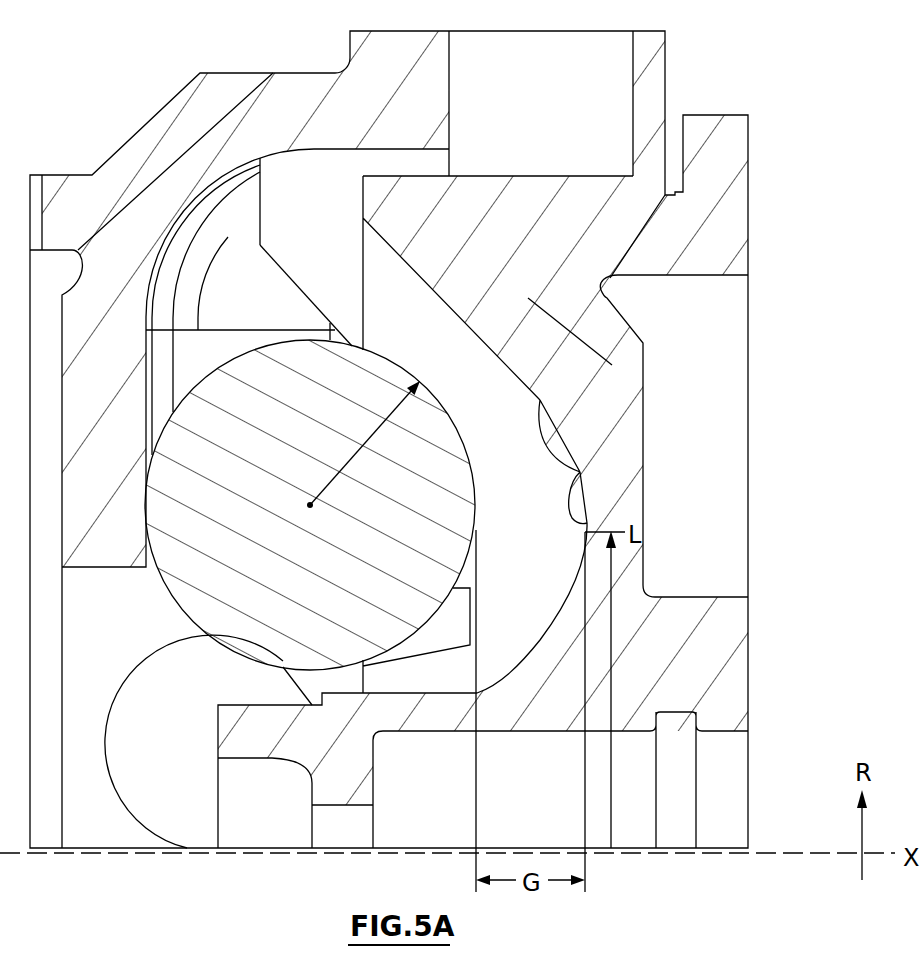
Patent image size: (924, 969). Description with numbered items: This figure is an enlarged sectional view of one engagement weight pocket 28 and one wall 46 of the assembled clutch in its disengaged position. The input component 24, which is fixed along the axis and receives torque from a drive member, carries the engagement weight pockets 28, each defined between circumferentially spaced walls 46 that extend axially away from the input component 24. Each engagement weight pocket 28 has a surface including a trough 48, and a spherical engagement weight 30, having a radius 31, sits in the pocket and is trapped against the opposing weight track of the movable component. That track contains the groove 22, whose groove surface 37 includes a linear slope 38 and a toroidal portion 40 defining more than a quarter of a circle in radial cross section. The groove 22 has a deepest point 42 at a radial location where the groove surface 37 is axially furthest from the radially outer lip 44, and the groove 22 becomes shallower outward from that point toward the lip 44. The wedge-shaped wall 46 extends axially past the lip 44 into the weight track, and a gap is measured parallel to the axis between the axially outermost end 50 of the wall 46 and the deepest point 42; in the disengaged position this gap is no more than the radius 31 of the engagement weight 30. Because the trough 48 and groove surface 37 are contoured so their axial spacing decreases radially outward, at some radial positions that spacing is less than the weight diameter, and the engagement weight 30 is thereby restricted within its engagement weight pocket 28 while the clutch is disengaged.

The groove 22 is at (528, 504).
The input component 24 is at (163, 109).
The engagement weight pocket 28 is at (223, 361).
The engagement weight 30 is at (168, 416).
The radius 31 is at (363, 445).
The groove surface 37 is at (602, 316).
The slope 38 is at (447, 307).
The toroidal portion 40 is at (542, 396).
The deepest point 42 is at (581, 483).
The radially outer lip 44 is at (363, 191).
The wall 46 is at (300, 307).
The trough 48 is at (150, 273).
The axially outermost end 50 is at (478, 616).